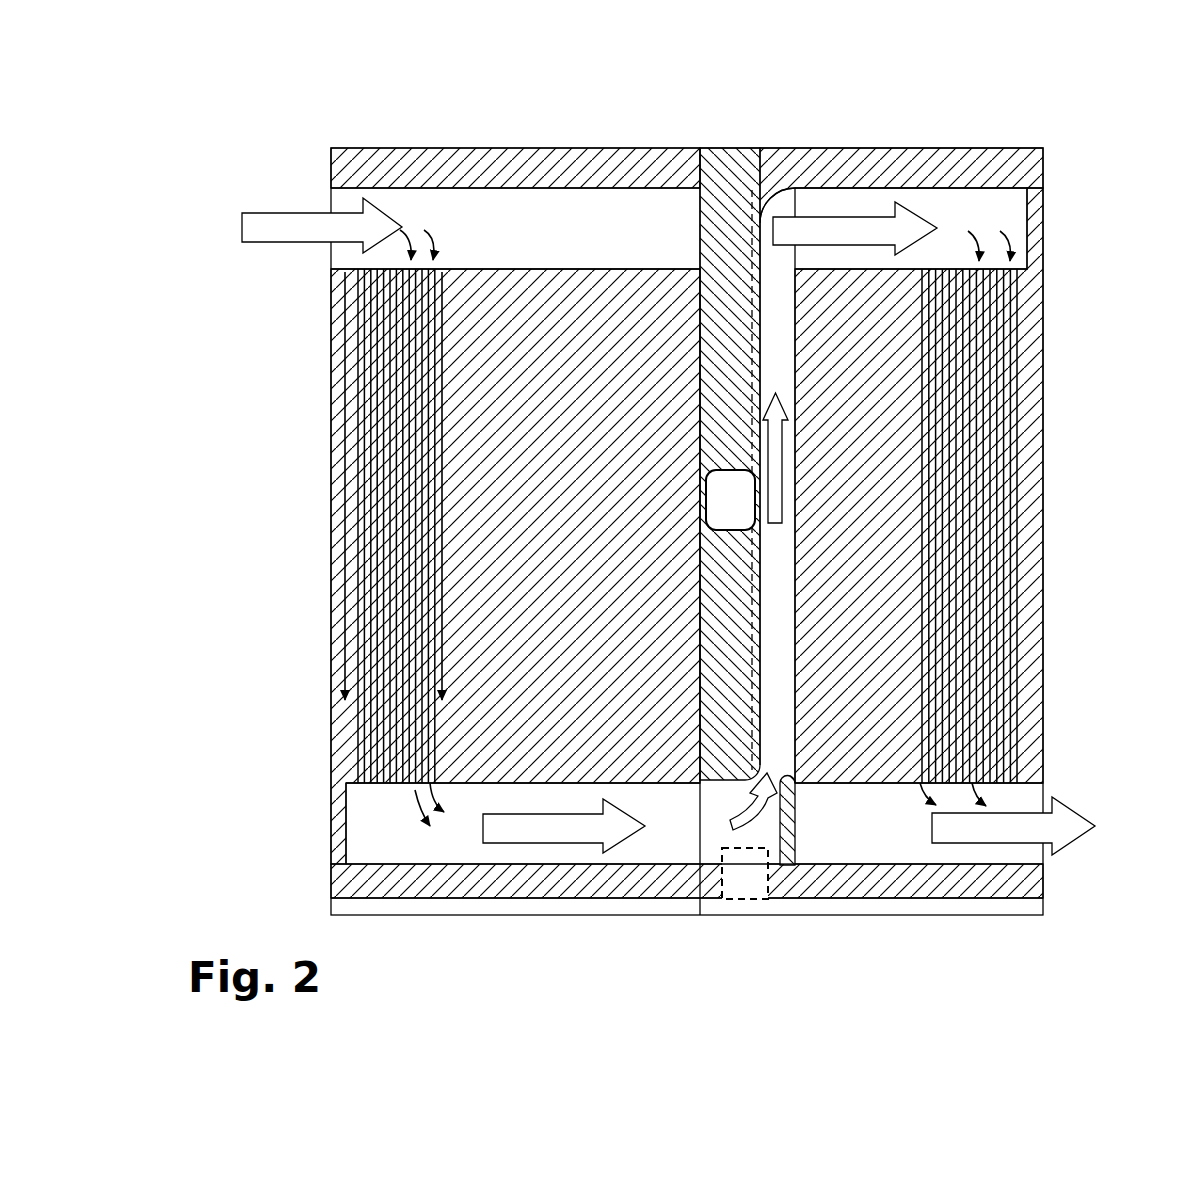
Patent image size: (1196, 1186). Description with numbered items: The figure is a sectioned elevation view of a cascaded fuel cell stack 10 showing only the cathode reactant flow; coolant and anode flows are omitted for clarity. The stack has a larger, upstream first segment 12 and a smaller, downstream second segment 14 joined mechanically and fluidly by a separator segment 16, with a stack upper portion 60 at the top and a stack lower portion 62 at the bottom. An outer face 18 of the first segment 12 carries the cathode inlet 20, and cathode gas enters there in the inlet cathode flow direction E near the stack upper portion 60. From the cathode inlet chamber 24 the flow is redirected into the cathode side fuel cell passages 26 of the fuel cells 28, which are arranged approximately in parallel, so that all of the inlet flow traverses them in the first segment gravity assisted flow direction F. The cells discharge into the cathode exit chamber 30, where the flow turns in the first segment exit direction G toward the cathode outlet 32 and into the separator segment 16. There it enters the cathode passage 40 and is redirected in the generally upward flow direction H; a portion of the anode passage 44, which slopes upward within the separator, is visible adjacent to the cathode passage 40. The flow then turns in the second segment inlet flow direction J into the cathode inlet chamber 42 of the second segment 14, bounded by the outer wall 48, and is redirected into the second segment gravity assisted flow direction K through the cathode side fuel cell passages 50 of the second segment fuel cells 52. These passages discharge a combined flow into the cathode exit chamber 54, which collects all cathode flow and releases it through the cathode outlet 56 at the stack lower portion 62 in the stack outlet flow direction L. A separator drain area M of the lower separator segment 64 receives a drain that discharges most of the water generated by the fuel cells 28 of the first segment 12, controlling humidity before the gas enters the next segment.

The cascaded fuel cell stack 10 is at (1068, 432).
The first segment 12 is at (488, 170).
The second segment 14 is at (916, 150).
The separator segment 16 is at (729, 215).
The outer face 18 is at (330, 400).
The cathode inlet 20 is at (273, 233).
The cathode inlet chamber 24 is at (406, 213).
The cathode side fuel cell passages 26 is at (337, 526).
The fuel cells 28 is at (362, 515).
The cathode exit chamber 30 is at (563, 877).
The cathode outlet 32 is at (703, 820).
The cathode passage 40 is at (780, 213).
The cathode inlet chamber 42 is at (939, 182).
The anode passage 44 is at (727, 487).
The outlet side wall 48 is at (1035, 220).
The cathode side fuel cell passages 50 is at (1032, 526).
The second segment fuel cells 52 is at (1013, 512).
The cathode exit chamber 54 is at (947, 850).
The cathode outlet 56 is at (1064, 782).
The stack upper portion 60 is at (584, 152).
The stack lower portion 62 is at (912, 915).
The lower separator segment 64 is at (761, 924).
The inlet cathode flow E is at (280, 217).
The first segment gravity assisted flow direction F is at (349, 632).
The first segment exit direction G is at (615, 835).
The generally upward flow direction H is at (757, 818).
The second segment inlet flow direction J is at (872, 203).
The second segment gravity assisted flow direction K is at (1018, 240).
The stack outlet flow direction L is at (1063, 825).
The separator drain area M is at (758, 900).